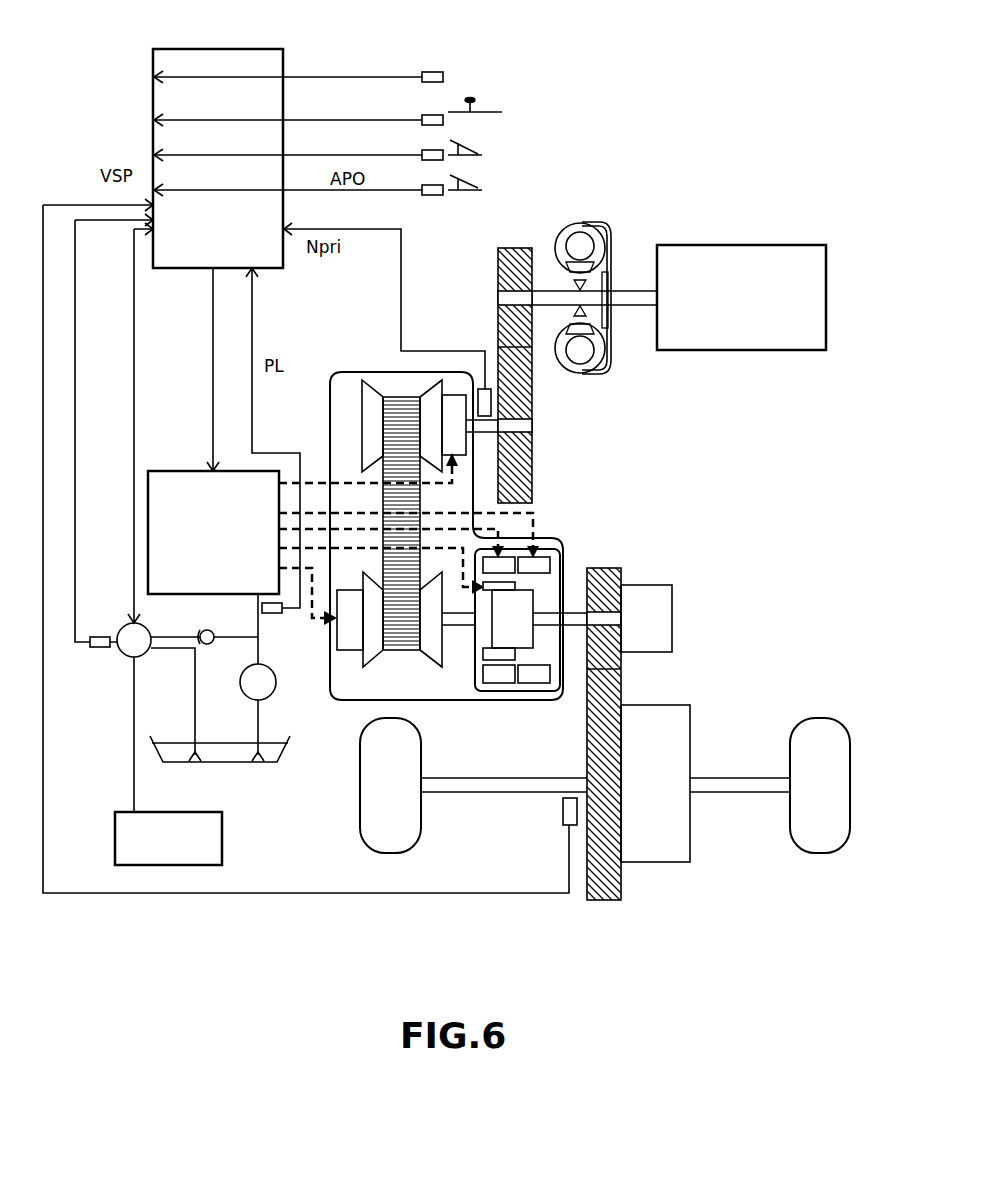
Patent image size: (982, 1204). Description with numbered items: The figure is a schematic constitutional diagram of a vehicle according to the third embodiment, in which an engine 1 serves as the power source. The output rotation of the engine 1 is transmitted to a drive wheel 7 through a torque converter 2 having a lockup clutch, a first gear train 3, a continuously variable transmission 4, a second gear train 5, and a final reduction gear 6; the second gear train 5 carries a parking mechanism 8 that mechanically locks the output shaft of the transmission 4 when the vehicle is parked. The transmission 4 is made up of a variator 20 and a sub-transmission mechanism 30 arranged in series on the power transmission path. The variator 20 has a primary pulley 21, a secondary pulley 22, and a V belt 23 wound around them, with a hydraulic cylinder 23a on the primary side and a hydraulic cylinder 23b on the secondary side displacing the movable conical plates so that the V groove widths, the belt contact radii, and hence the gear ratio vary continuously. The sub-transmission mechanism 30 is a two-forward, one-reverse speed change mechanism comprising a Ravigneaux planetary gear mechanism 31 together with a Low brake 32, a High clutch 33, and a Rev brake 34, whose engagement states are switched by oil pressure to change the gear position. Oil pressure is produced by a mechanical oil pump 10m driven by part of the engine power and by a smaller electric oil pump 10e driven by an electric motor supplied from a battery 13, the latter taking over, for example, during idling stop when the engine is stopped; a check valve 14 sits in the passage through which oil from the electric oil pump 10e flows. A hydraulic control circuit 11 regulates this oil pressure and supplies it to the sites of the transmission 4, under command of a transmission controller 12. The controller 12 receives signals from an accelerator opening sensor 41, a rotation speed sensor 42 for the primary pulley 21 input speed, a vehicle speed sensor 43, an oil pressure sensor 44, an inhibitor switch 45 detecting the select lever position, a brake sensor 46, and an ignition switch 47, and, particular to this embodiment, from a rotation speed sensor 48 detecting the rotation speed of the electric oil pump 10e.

The engine 1 is at (810, 258).
The torque converter 2 is at (608, 258).
The first gear train 3 is at (517, 236).
The transmission 4 is at (423, 502).
The second gear train 5 is at (605, 910).
The final reduction gear 6 is at (655, 852).
The drive wheel 7 is at (398, 850).
The parking mechanism 8 is at (658, 606).
The electric oil pump 10e is at (128, 622).
The mechanical oil pump 10m is at (270, 692).
The hydraulic control circuit 11 is at (174, 476).
The transmission controller 12 is at (274, 58).
The battery 13 is at (213, 852).
The check valve 14 is at (205, 646).
The variator 20 is at (423, 502).
The primary pulley 21 is at (390, 386).
The secondary pulley 22 is at (381, 637).
The V belt 23 is at (402, 395).
The hydraulic cylinder 23a is at (452, 407).
The hydraulic cylinder 23b is at (346, 638).
The sub-transmission mechanism 30 is at (538, 581).
The Ravigneaux planetary gear mechanism 31 is at (518, 610).
The Low brake 32 is at (505, 566).
The High clutch 33 is at (498, 655).
The Rev brake 34 is at (540, 566).
The accelerator opening sensor 41 is at (432, 192).
The rotation speed sensor 42 is at (482, 400).
The vehicle speed sensor 43 is at (564, 815).
The oil pressure sensor 44 is at (276, 614).
The inhibitor switch 45 is at (432, 120).
The brake sensor 46 is at (430, 157).
The ignition switch 47 is at (432, 77).
The rotation speed sensor 48 is at (100, 648).